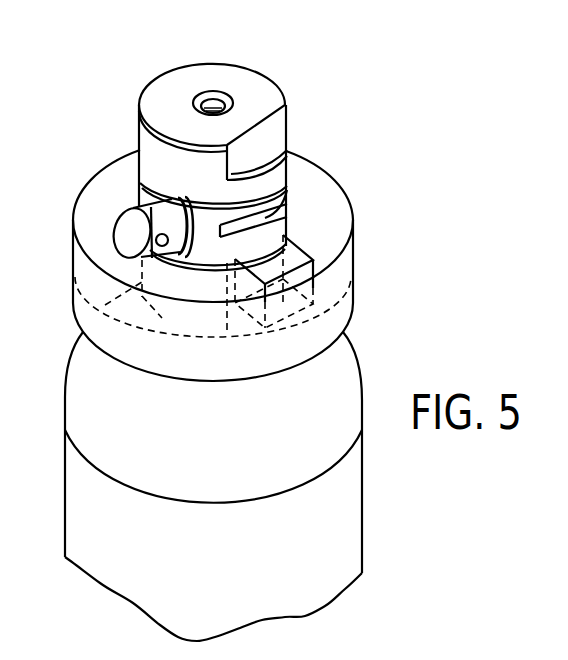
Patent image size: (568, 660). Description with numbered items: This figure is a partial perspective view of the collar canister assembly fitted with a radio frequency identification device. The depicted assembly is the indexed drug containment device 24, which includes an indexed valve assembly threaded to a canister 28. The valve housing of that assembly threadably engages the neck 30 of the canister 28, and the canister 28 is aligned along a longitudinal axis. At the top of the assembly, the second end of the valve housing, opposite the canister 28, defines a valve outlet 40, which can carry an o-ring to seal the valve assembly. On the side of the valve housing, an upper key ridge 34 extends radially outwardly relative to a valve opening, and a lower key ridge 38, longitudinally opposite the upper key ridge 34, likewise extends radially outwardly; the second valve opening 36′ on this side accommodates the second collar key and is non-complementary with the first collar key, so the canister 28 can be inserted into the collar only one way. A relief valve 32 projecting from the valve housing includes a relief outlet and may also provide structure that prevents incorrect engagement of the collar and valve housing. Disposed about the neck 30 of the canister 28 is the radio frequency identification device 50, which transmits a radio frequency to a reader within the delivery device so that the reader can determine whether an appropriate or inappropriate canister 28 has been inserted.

The indexed drug containment device 24 is at (218, 148).
The canister 28 is at (362, 525).
The neck 30 is at (98, 336).
The relief valve 32 is at (128, 223).
The upper key ridge 34 is at (292, 163).
The second valve opening 36′ is at (355, 216).
The lower key ridge 38 is at (230, 262).
The valve outlet 40 is at (196, 104).
The radio frequency identification device 50 is at (325, 188).